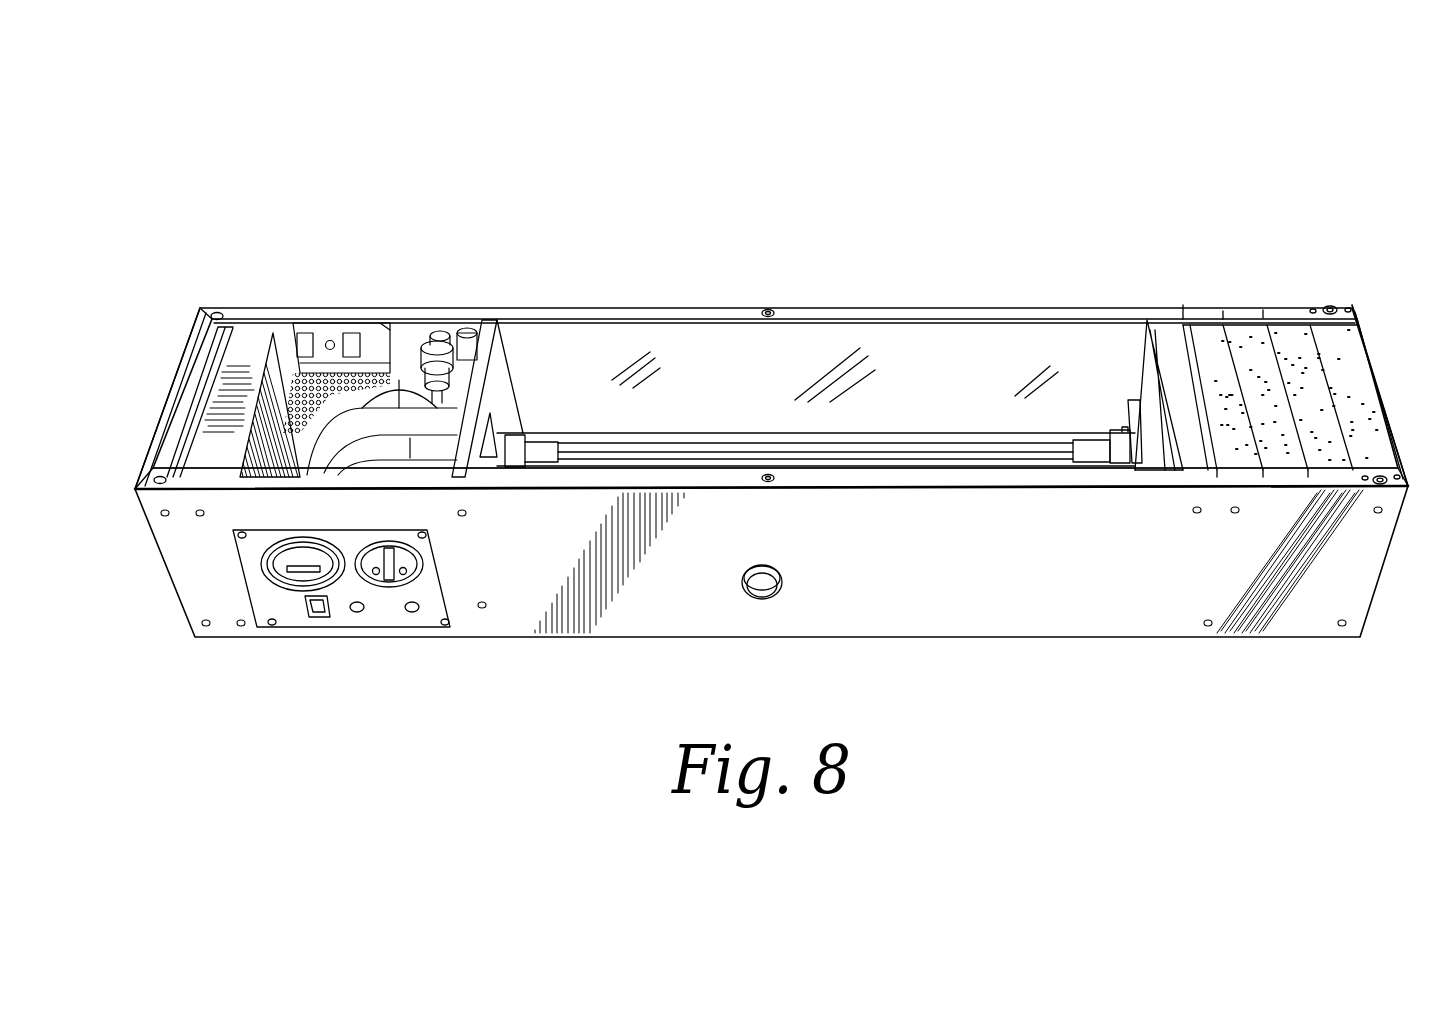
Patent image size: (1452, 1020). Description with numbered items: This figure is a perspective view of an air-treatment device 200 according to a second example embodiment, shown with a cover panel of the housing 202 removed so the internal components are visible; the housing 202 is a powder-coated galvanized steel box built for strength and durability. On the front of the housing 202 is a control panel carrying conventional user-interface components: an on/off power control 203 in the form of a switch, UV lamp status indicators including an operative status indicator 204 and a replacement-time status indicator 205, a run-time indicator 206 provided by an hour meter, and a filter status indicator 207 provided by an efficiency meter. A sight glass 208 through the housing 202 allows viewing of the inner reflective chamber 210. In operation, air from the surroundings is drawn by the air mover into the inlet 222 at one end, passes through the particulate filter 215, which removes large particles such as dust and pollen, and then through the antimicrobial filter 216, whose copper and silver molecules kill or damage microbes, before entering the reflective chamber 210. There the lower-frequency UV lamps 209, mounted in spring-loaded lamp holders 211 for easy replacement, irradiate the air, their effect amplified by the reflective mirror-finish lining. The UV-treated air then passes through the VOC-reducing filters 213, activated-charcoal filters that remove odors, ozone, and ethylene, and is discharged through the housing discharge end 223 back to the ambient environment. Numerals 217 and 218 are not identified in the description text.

The air-treatment device 200 is at (380, 137).
The housing 202 is at (990, 585).
The on/off power control 203 is at (315, 620).
The UV lamp operative status indicator 204 is at (357, 615).
The UV lamp replacement-time status indicator 205 is at (415, 615).
The run-time indicator 206 is at (265, 575).
The filter status indicator 207 is at (423, 575).
The sight glass 208 is at (762, 585).
The UV lamps 209 is at (958, 437).
The reflective chamber 210 is at (721, 372).
The lamp holders 211 is at (1120, 442).
The VOC-reducing filters 213 is at (1283, 330).
The particulate filter 215 is at (162, 433).
The antimicrobial filter 216 is at (243, 355).
The electronics 217 is at (380, 399).
The partition 218 is at (487, 398).
The inlet 222 is at (170, 372).
The housing discharge end 223 is at (1380, 390).